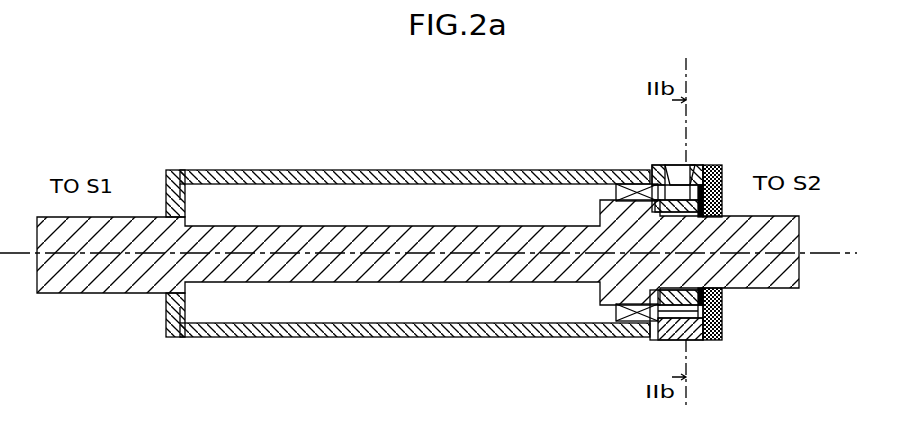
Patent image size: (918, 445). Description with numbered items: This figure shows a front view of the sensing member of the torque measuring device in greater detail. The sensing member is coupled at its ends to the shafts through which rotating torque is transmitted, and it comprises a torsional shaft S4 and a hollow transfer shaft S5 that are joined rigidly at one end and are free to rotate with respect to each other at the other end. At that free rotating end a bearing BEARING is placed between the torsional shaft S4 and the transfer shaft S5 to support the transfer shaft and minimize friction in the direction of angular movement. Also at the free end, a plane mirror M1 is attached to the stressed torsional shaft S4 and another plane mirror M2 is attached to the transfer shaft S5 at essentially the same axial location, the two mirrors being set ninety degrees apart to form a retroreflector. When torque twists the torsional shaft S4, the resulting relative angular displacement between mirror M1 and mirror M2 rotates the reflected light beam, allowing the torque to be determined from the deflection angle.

The torsional shaft S4 is at (385, 222).
The hollow transfer shaft S5 is at (385, 343).
The bearing BEARING is at (620, 198).
The plane mirror M1 is at (670, 187).
The plane mirror M2 is at (700, 168).